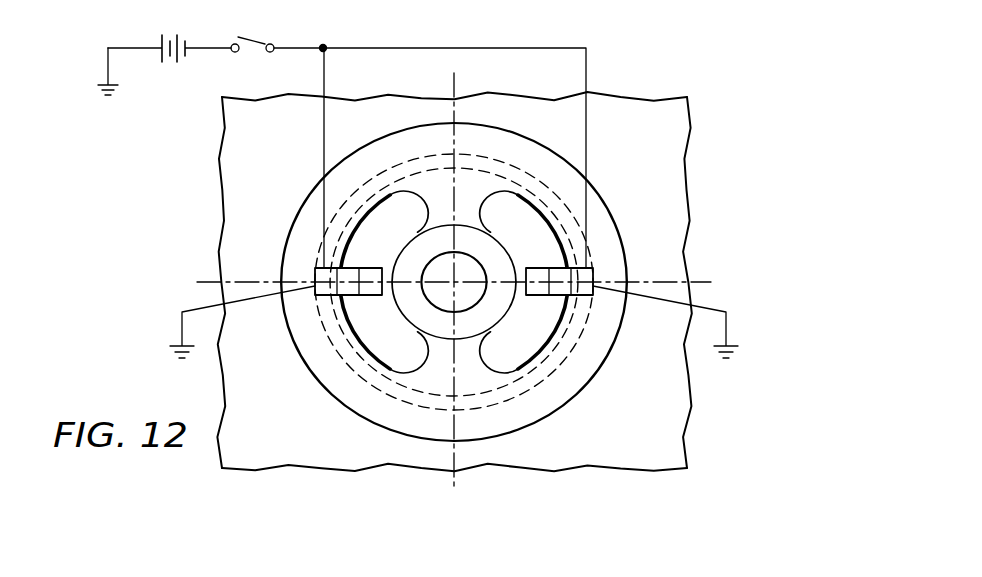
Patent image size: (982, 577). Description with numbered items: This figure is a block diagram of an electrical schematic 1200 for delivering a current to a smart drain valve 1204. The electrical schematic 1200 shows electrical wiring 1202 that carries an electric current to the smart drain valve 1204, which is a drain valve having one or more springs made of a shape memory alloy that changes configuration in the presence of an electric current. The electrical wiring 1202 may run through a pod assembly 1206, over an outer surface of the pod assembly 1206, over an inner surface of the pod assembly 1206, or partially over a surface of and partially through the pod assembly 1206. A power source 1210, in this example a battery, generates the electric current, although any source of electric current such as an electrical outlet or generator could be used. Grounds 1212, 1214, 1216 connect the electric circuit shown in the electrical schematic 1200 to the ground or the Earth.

The electrical schematic 1200 is at (762, 114).
The electrical wiring 1202 is at (586, 73).
The smart drain valve 1204 is at (690, 193).
The pod assembly 1206 is at (697, 398).
The power source 1210 is at (162, 38).
The ground 1212 is at (108, 85).
The ground 1214 is at (181, 347).
The ground 1216 is at (727, 347).